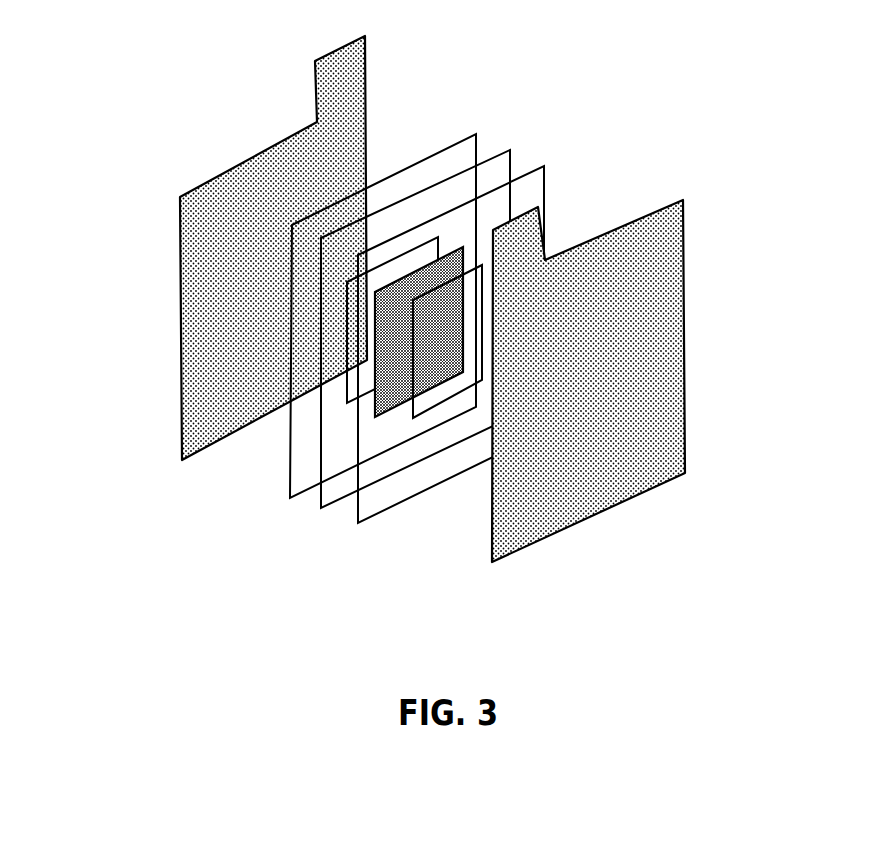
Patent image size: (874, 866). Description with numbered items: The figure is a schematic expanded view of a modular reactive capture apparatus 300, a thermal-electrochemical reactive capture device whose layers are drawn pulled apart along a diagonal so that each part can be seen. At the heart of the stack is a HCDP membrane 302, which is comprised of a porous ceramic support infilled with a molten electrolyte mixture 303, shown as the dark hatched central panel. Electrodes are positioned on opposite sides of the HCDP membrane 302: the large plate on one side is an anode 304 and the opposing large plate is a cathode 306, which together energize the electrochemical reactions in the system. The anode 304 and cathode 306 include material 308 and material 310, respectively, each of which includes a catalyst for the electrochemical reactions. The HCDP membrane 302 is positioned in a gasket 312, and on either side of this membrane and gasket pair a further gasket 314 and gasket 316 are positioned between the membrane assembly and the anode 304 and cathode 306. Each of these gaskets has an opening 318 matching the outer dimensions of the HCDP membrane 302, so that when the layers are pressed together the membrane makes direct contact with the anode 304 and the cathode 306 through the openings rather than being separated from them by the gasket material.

The modular reactive capture apparatus 300 is at (150, 53).
The HCDP membrane 302 is at (348, 362).
The molten electrolyte mixture 303 is at (443, 353).
The anode 304 is at (178, 277).
The cathode 306 is at (683, 285).
The material 308 is at (263, 290).
The material 310 is at (610, 381).
The gasket 312 is at (512, 160).
The gasket 314 is at (453, 142).
The gasket 316 is at (547, 187).
The opening 318 is at (455, 410).